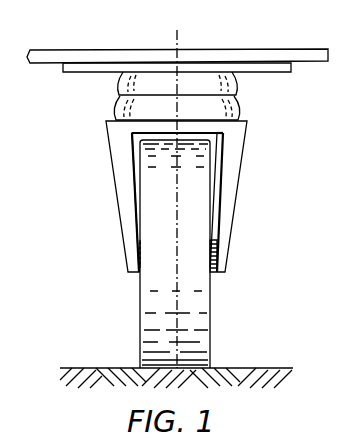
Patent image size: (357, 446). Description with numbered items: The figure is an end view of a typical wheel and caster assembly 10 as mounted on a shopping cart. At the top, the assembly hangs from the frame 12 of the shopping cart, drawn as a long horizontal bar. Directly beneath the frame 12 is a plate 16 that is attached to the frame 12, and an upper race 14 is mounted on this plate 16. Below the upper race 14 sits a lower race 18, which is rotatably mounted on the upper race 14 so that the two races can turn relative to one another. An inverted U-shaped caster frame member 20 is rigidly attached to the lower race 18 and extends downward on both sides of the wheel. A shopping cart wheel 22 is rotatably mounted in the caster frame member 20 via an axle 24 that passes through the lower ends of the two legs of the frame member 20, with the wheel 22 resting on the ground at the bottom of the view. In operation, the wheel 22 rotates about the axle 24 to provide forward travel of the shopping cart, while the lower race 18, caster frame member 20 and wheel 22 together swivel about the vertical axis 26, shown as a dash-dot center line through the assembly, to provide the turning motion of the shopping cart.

The wheel and caster assembly 10 is at (272, 248).
The frame 12 is at (262, 57).
The upper race 14 is at (237, 80).
The plate 16 is at (277, 68).
The lower race 18 is at (239, 104).
The caster frame member 20 is at (240, 183).
The shopping cart wheel 22 is at (210, 323).
The axle 24 is at (214, 268).
The vertical axis 26 is at (177, 34).